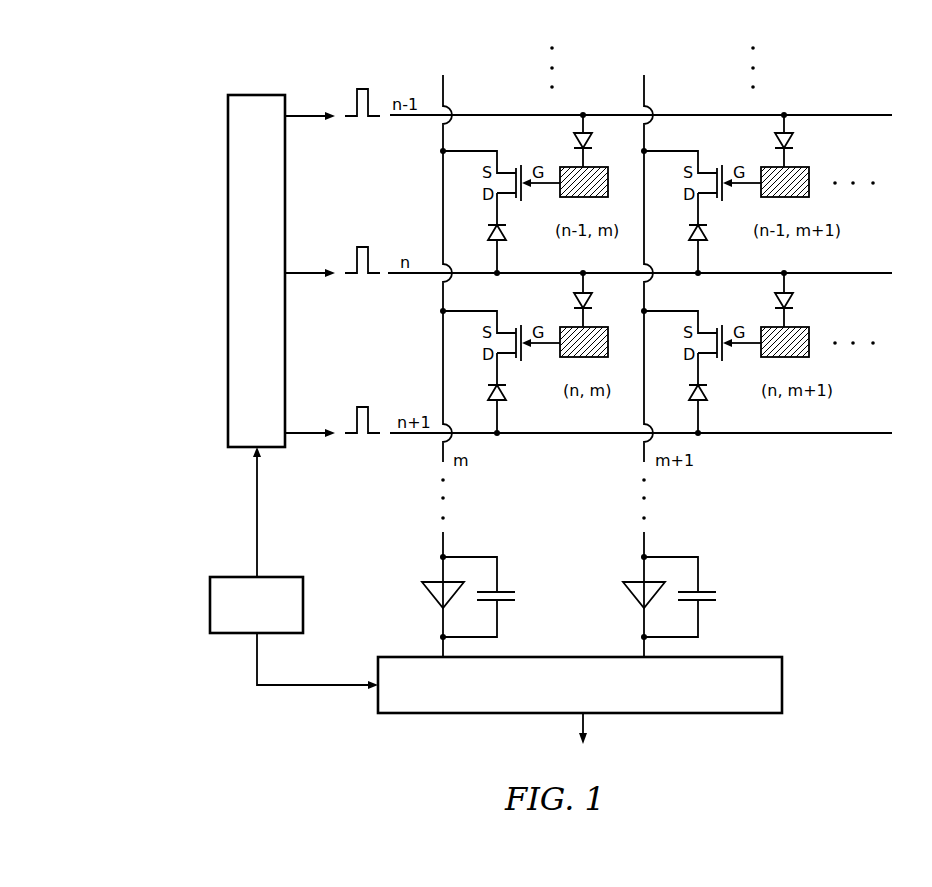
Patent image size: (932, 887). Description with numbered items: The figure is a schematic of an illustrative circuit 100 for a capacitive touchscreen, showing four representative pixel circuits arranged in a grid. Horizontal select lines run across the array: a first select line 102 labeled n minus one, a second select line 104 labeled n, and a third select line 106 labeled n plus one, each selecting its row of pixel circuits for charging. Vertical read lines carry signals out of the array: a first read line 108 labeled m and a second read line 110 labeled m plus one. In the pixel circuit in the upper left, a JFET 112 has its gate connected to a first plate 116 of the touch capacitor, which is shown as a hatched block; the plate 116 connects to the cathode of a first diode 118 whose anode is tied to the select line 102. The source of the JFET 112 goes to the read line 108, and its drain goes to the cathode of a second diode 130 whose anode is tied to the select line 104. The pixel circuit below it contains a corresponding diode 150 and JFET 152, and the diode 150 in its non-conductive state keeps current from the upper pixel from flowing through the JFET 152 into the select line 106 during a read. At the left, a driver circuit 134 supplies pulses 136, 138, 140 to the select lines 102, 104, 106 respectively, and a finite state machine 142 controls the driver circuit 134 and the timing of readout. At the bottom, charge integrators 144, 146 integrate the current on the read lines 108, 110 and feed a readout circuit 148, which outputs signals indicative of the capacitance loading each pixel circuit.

The circuit 100 is at (194, 66).
The first select line 102 is at (873, 115).
The second select line 104 is at (873, 273).
The third select line 106 is at (873, 433).
The first read line 108 is at (443, 457).
The second read line 110 is at (644, 457).
The JFET 112 is at (524, 208).
The first plate 116 is at (600, 170).
The first diode 118 is at (572, 143).
The second diode 130 is at (489, 229).
The driver circuit 134 is at (228, 195).
The pulse 136 is at (357, 89).
The pulse 138 is at (357, 248).
The pulse 140 is at (357, 408).
The finite state machine 142 is at (210, 608).
The charge integrator 144 is at (422, 573).
The charge integrator 146 is at (623, 573).
The readout circuit 148 is at (784, 686).
The diode 150 is at (489, 391).
The JFET 152 is at (524, 369).